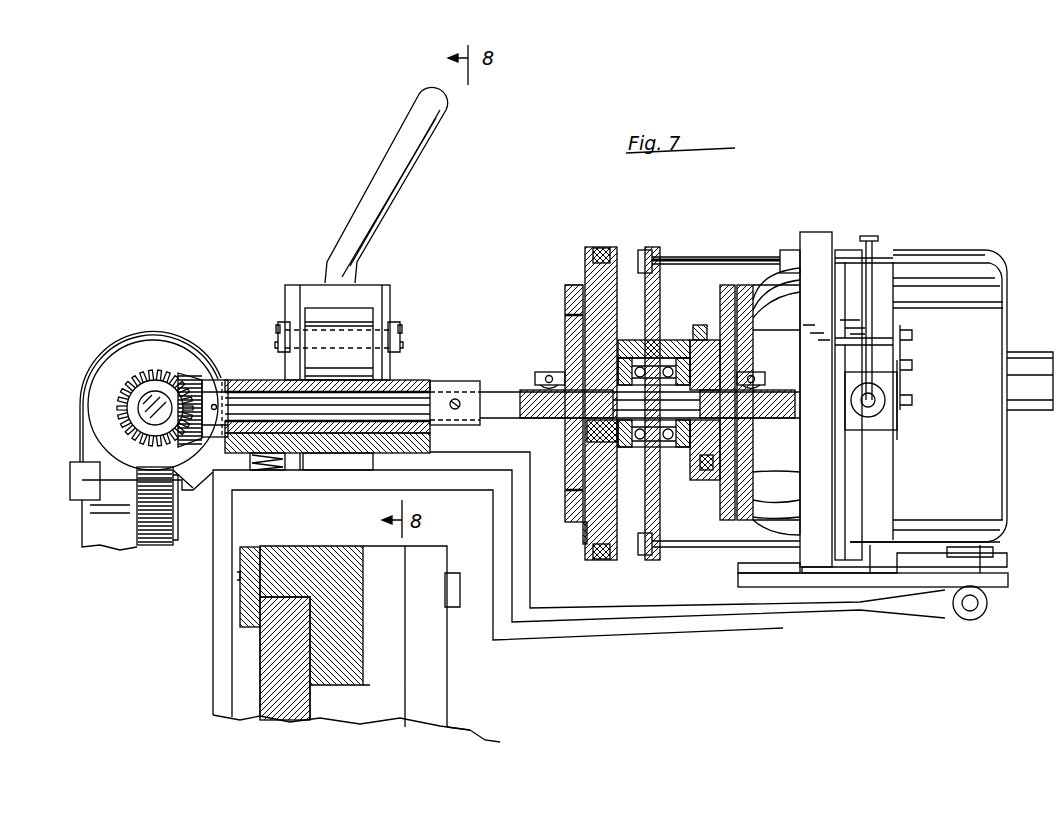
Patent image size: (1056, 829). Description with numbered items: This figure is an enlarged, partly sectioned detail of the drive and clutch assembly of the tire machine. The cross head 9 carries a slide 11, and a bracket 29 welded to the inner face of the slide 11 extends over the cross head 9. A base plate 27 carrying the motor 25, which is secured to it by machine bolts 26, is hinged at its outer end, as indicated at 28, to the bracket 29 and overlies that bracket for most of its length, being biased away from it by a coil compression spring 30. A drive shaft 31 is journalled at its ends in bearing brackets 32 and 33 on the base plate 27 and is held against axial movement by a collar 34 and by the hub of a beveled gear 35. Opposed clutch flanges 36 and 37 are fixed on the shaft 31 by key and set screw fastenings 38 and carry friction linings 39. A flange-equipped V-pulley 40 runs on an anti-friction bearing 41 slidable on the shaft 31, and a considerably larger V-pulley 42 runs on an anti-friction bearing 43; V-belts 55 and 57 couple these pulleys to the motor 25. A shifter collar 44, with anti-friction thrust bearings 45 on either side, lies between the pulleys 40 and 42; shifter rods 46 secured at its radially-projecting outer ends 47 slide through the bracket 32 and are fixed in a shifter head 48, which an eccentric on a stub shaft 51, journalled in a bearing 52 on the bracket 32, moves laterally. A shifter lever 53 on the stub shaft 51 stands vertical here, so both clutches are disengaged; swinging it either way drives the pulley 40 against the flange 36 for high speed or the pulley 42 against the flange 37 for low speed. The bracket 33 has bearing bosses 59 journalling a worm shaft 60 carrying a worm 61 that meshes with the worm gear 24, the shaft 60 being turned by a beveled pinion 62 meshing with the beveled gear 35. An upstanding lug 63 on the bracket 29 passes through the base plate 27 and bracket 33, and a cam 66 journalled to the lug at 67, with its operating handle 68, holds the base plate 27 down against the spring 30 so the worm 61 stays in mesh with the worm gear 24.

The cross head 9 is at (365, 720).
The slide 11 is at (283, 718).
The worm gear 24 is at (150, 550).
The motor 25 is at (1000, 275).
The machine bolts 26 is at (1015, 522).
The base plate 27 is at (478, 436).
The hinge 28 is at (988, 603).
The bracket 29 is at (345, 490).
The coil compression spring 30 is at (268, 480).
The drive shaft 31 is at (495, 392).
The bearing bracket 32 is at (816, 232).
The bearing bracket 33 is at (408, 380).
The collar 34 is at (452, 381).
The beveled gear 35 is at (190, 373).
The clutch flange 36 is at (744, 285).
The clutch flange 37 is at (567, 285).
The key and set screw fastenings 38 is at (548, 372).
The friction linings 39 is at (572, 285).
The V-pulley 40 is at (713, 505).
The anti-friction bearing 41 is at (712, 390).
The V-pulley 42 is at (587, 540).
The anti-friction bearing 43 is at (605, 442).
The shifter collar 44 is at (640, 348).
The anti-friction thrust bearings 45 is at (628, 358).
The shifter rods 46 is at (690, 256).
The radially-projecting outer ends 47 is at (660, 290).
The shifter head 48 is at (860, 250).
The stub shaft 51 is at (885, 398).
The bearing 52 is at (887, 418).
The shifter lever 53 is at (880, 258).
The V-belt 55 is at (700, 325).
The V-belt 57 is at (601, 248).
The bearing bosses 59 is at (215, 380).
The worm shaft 60 is at (145, 410).
The worm 61 is at (100, 385).
The beveled pinion 62 is at (145, 370).
The upstanding lug 63 is at (352, 373).
The cam 66 is at (295, 285).
The cam pivot 67 is at (400, 322).
The operating handle 68 is at (352, 153).